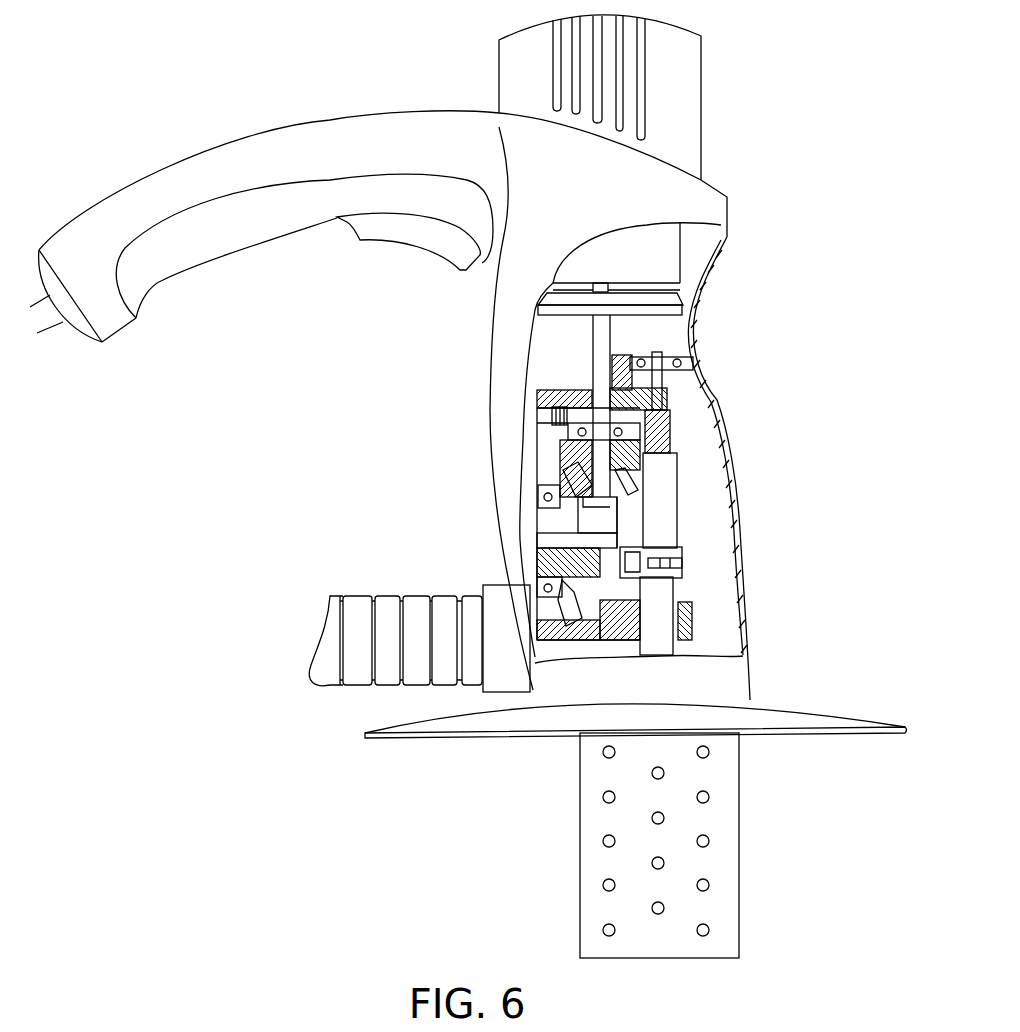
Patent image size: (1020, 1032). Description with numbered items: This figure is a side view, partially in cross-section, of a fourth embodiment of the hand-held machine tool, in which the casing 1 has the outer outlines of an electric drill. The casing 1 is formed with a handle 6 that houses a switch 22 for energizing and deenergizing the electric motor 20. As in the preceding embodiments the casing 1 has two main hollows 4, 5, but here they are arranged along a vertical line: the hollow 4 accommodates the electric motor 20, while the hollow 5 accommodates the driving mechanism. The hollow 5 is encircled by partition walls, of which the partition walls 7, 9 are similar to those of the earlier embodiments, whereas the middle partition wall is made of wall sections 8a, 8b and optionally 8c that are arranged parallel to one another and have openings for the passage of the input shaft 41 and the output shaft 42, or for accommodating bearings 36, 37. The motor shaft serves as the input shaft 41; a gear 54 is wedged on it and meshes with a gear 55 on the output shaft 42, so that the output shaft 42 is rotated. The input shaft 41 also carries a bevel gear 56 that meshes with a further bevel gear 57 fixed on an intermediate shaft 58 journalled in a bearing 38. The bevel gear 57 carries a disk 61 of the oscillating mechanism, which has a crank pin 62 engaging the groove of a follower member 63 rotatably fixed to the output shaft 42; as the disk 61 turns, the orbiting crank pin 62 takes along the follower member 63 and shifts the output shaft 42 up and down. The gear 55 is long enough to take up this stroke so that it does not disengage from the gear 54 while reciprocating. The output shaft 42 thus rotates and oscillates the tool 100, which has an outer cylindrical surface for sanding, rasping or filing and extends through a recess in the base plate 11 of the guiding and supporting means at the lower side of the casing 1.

The casing 1 is at (703, 66).
The handle 6 is at (215, 172).
The switch 22 is at (373, 233).
The main hollow 4 is at (492, 287).
The electric motor 20 is at (657, 245).
The input shaft 41 is at (600, 323).
The wall section 8c is at (560, 390).
The gear 54 is at (552, 416).
The wall section 8b is at (693, 360).
The bearing 37 is at (680, 370).
The gear 55 is at (670, 425).
The wall section 8a is at (568, 433).
The bearing 36 is at (643, 458).
The output shaft 42 is at (677, 480).
The main hollow 5 is at (560, 447).
The partition wall 7 is at (563, 478).
The bevel gear 56 is at (628, 490).
The bearing 38 is at (560, 505).
The disk 61 is at (617, 528).
The follower member 63 is at (682, 556).
The intermediate shaft 58 is at (537, 547).
The crank pin 62 is at (620, 563).
The bevel gear 57 is at (567, 630).
The partition wall 9 is at (557, 660).
The base plate 11 is at (437, 718).
The tool 100 is at (723, 797).